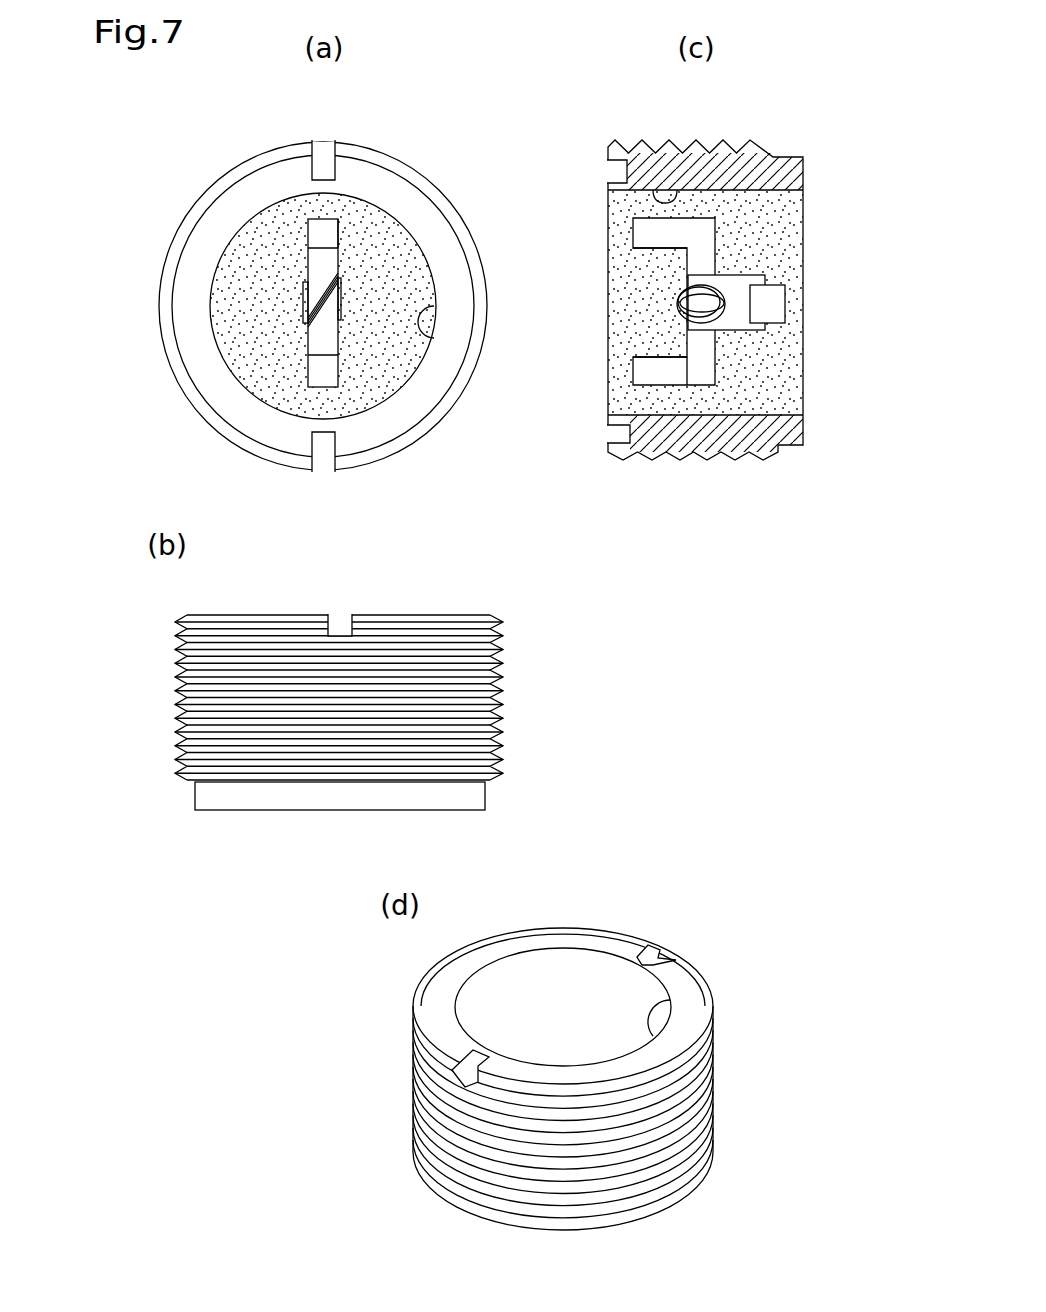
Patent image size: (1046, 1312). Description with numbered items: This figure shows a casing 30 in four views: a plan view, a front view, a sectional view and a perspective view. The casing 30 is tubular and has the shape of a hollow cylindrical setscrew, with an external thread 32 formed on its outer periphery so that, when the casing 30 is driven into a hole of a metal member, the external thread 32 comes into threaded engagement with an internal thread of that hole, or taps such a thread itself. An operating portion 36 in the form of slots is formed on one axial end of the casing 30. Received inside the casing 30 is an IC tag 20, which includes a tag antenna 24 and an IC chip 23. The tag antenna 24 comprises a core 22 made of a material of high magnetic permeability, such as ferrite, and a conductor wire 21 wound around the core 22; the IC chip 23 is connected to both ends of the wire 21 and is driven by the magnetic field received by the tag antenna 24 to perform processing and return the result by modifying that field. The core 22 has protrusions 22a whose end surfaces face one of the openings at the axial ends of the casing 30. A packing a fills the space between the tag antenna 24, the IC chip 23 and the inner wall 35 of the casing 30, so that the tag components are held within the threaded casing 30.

The IC tag 20 is at (374, 394).
The conductor wire 21 is at (307, 301).
The core 22 is at (330, 262).
The protrusion 22a is at (321, 236).
The IC chip 23 is at (321, 290).
The tag antenna 24 is at (345, 205).
The casing 30 is at (170, 390).
The external thread 32 is at (474, 377).
The inner wall 35 is at (428, 321).
The operating portion 36 is at (328, 150).
The packing a is at (265, 314).